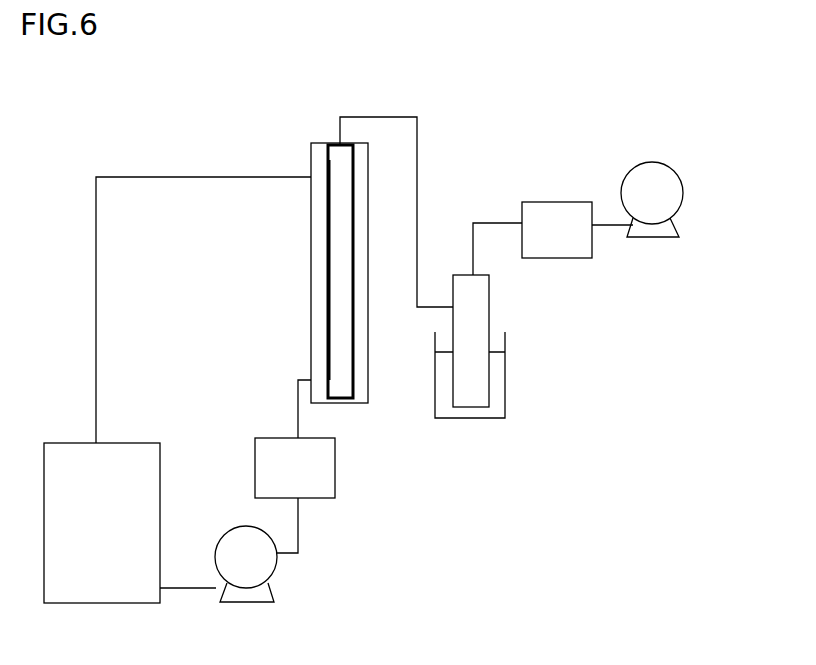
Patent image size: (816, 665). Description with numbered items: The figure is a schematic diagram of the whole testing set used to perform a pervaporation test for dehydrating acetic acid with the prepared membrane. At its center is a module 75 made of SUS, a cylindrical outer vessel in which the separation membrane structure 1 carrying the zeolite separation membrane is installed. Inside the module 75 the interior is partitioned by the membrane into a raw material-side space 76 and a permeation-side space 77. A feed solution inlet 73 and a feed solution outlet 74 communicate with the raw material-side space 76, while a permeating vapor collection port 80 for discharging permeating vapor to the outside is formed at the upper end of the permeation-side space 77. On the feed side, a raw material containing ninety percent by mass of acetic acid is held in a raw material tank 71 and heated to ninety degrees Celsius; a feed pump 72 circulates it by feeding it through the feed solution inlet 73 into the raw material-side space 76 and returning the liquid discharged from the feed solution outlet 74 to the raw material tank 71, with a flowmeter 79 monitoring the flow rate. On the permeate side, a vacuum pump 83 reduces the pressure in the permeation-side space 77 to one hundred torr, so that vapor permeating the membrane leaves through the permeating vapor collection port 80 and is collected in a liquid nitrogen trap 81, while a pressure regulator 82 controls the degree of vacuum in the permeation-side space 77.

The separation membrane structure 1 is at (333, 290).
The raw material tank 71 is at (143, 480).
The feed pump 72 is at (258, 567).
The feed solution inlet 73 is at (310, 378).
The feed solution outlet 74 is at (310, 177).
The module 75 is at (370, 398).
The raw material-side space 76 is at (315, 228).
The permeation-side space 77 is at (333, 202).
The flowmeter 79 is at (327, 485).
The permeating vapor collection port 80 is at (338, 143).
The liquid N2 trap 81 is at (490, 380).
The pressure regulator 82 is at (562, 252).
The vacuum pump 83 is at (672, 177).